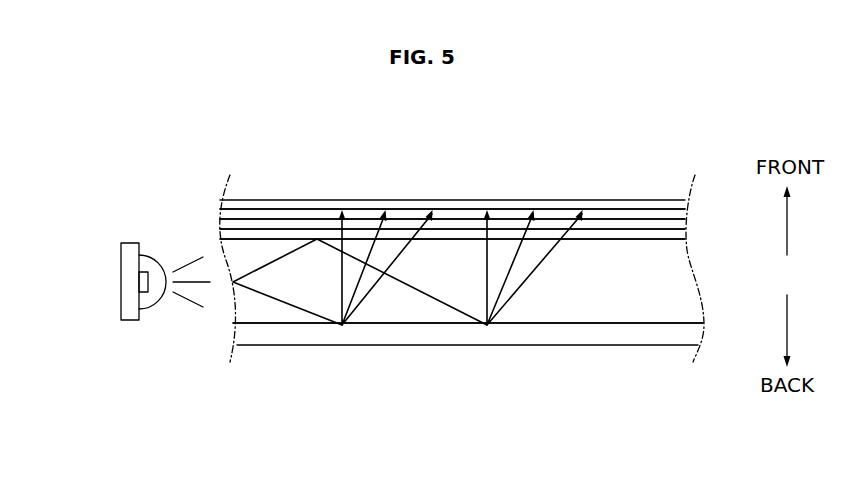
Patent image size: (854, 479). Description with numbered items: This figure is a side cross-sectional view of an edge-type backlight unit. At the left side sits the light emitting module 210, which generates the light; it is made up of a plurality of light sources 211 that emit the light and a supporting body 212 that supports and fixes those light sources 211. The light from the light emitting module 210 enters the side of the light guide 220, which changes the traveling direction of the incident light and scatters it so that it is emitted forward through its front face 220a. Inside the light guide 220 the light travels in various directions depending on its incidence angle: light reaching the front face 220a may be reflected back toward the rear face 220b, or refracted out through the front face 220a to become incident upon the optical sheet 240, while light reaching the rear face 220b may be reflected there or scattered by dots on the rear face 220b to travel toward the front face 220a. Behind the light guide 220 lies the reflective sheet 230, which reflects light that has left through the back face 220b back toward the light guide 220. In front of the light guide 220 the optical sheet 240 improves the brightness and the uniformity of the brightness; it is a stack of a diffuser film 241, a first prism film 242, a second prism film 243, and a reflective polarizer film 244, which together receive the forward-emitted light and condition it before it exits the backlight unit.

The light emitting module 210 is at (140, 344).
The light sources 211 is at (152, 306).
The supporting body 212 is at (124, 318).
The light guide 220 is at (493, 275).
The front surface of light guide plate 220a is at (632, 236).
The back surface of light guide plate 220b is at (605, 326).
The reflective sheet 230 is at (323, 338).
The optical sheet 240 is at (360, 188).
The diffuser film 241 is at (220, 235).
The first prism film 242 is at (220, 224).
The second prism film 243 is at (220, 214).
The reflective polarizer film 244 is at (220, 204).